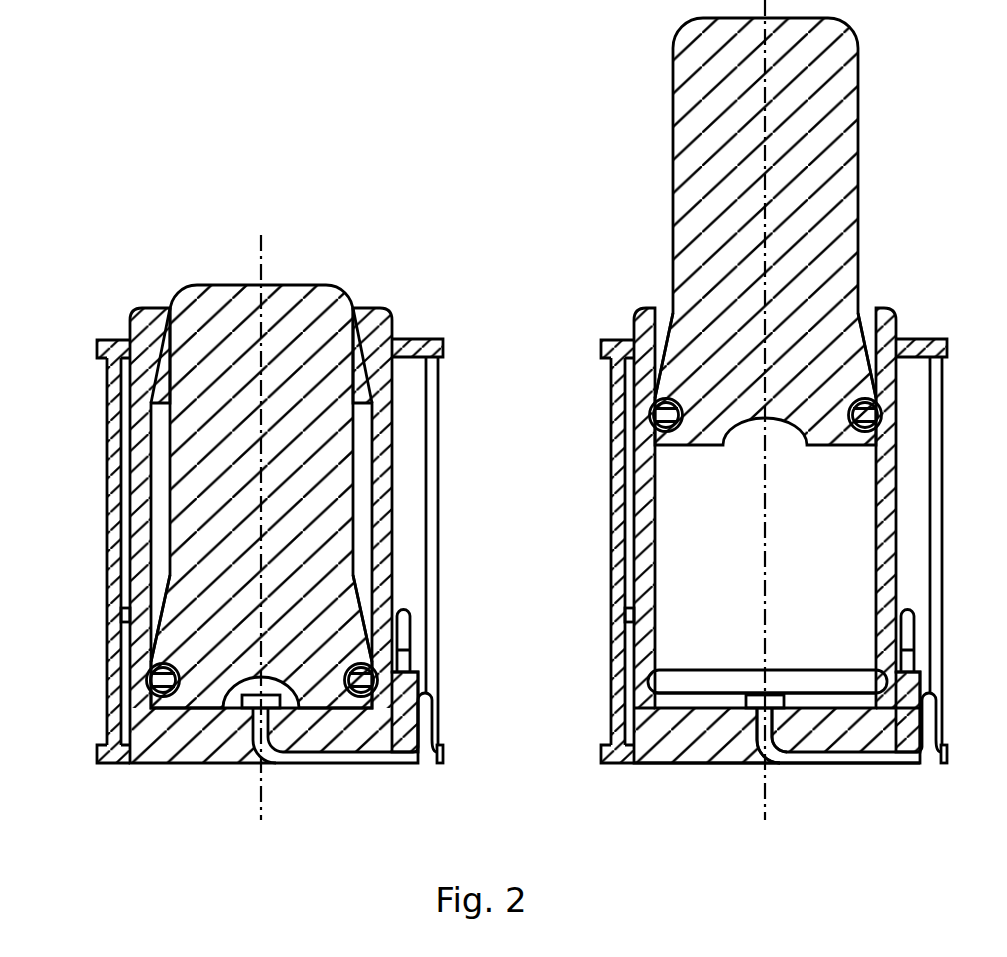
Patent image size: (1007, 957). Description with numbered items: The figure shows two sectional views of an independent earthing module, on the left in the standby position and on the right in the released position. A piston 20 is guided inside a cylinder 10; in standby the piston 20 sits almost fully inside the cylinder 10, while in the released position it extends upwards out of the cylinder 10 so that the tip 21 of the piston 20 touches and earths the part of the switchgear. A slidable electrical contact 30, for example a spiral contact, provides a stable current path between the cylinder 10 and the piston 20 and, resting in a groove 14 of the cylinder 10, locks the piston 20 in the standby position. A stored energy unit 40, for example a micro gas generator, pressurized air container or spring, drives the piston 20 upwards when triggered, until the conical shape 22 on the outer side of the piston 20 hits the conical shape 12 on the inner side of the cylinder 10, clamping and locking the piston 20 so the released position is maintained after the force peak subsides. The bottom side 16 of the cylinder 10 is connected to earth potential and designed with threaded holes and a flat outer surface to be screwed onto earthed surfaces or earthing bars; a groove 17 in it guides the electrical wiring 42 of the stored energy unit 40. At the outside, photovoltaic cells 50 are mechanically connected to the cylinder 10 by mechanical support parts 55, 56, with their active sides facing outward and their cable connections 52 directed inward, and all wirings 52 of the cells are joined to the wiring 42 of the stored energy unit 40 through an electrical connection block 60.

The cylinder 10 is at (373, 335).
The conical shape at the inner side of the cylinder 12 is at (368, 375).
The groove of the cylinder 14 is at (648, 676).
The bottom side of the cylinder 16 is at (690, 766).
The groove 17 is at (768, 766).
The piston 20 is at (289, 312).
The tip of the piston 21 is at (256, 281).
The conical shape at the outer side of the piston 22 is at (364, 599).
The slidable electrical contact 30 is at (157, 680).
The stored energy unit 40 is at (252, 703).
The electrical wiring of the stored energy unit 42 is at (425, 752).
The photovoltaic cell 50 is at (112, 470).
The cable connections of the photovoltaic cells 52 is at (124, 615).
The mechanical support part 55 is at (105, 758).
The mechanical support part 56 is at (104, 347).
The electrical connection block 60 is at (405, 698).